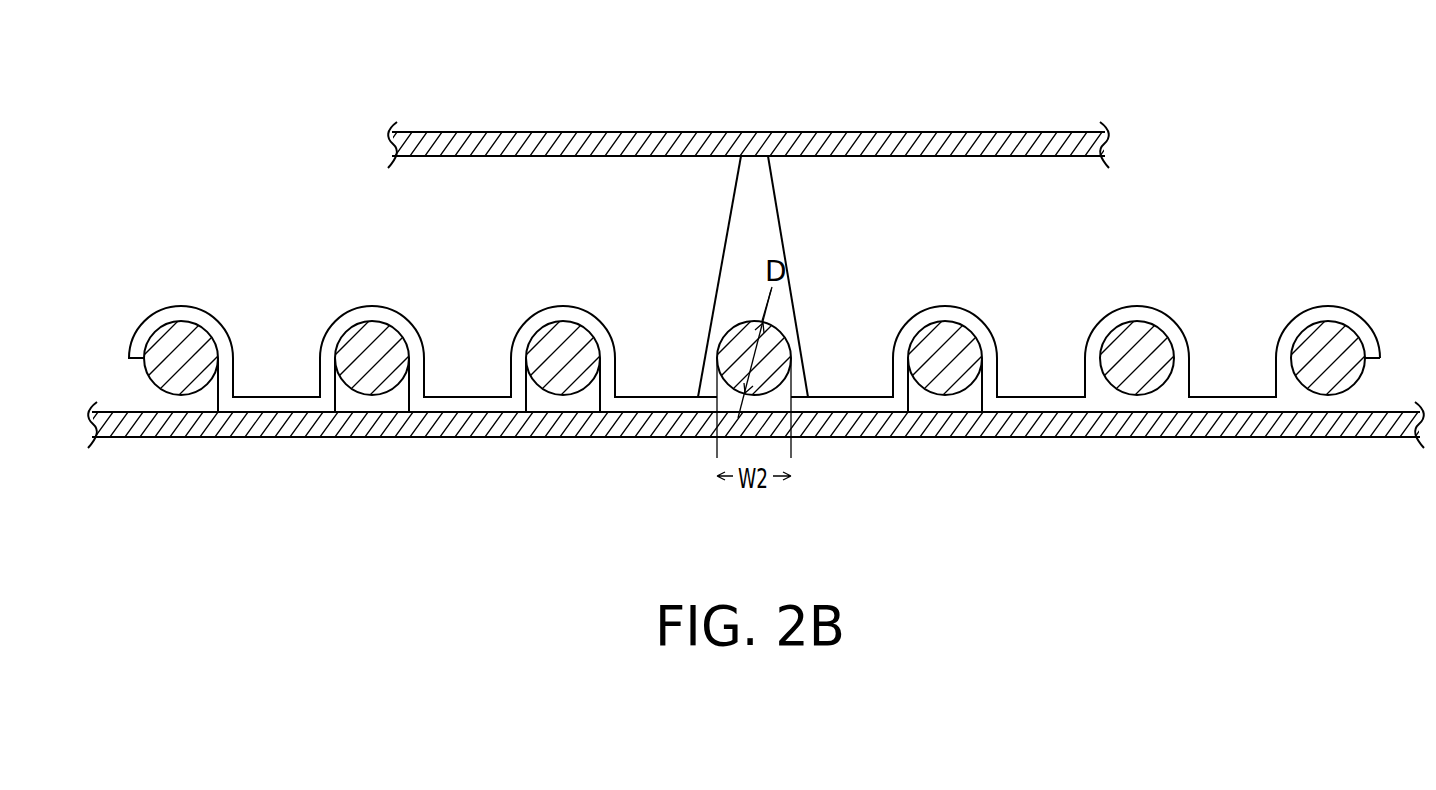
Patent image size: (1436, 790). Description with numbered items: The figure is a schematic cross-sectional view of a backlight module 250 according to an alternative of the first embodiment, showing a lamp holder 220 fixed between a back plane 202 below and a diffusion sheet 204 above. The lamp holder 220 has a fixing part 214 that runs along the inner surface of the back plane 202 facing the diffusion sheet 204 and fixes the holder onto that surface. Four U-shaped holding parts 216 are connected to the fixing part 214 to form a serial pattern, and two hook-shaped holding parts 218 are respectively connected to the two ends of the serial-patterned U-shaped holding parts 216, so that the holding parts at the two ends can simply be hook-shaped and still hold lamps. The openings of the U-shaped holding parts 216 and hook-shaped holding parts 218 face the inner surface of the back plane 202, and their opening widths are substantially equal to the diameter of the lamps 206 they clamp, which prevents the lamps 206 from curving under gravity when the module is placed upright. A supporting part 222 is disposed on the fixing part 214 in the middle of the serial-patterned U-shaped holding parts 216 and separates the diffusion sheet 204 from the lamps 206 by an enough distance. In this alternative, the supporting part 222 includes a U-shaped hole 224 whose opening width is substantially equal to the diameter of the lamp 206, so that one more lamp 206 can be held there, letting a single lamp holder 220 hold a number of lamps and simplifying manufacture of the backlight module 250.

The backlight module 250 is at (345, 62).
The back plane 202 is at (1010, 437).
The diffusion sheet 204 is at (975, 132).
The lamp 206 is at (218, 355).
The fixing part 214 is at (655, 397).
The U-shaped holding part 216 is at (563, 307).
The hook-shaped holding part 218 is at (178, 307).
The lamp holder 220 is at (640, 262).
The supporting part 222 is at (789, 272).
The U-shaped hole 224 is at (780, 395).